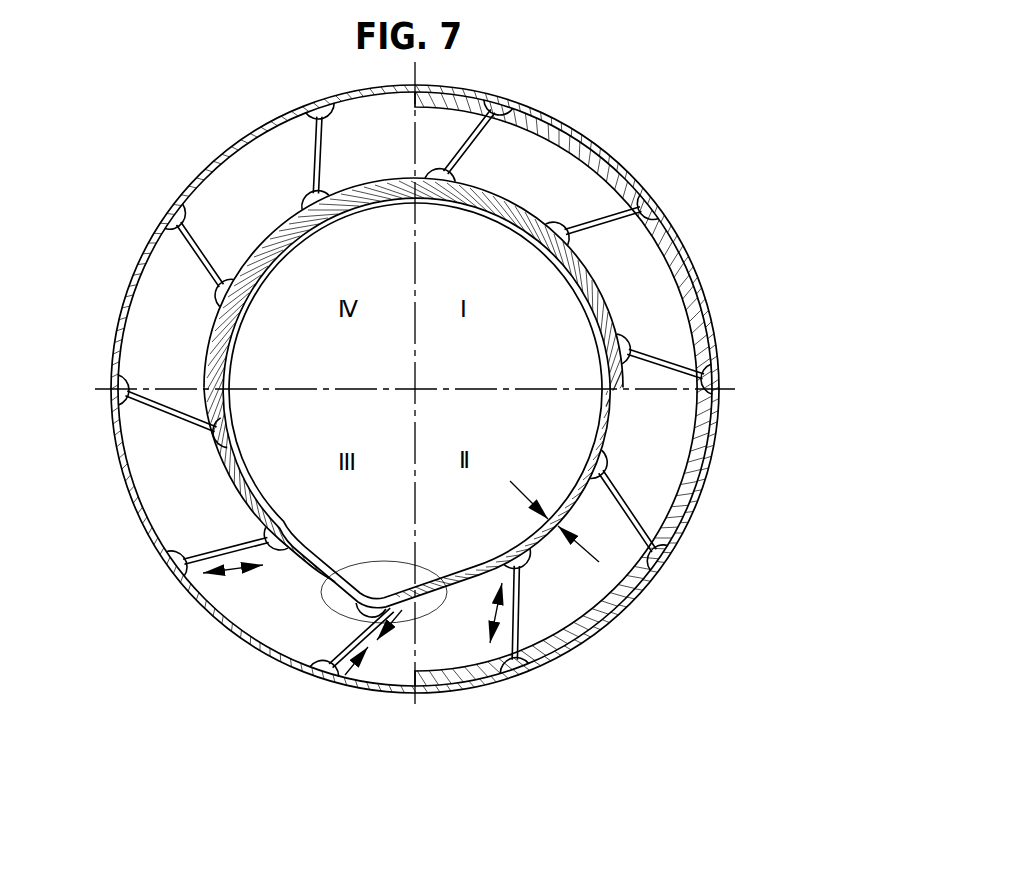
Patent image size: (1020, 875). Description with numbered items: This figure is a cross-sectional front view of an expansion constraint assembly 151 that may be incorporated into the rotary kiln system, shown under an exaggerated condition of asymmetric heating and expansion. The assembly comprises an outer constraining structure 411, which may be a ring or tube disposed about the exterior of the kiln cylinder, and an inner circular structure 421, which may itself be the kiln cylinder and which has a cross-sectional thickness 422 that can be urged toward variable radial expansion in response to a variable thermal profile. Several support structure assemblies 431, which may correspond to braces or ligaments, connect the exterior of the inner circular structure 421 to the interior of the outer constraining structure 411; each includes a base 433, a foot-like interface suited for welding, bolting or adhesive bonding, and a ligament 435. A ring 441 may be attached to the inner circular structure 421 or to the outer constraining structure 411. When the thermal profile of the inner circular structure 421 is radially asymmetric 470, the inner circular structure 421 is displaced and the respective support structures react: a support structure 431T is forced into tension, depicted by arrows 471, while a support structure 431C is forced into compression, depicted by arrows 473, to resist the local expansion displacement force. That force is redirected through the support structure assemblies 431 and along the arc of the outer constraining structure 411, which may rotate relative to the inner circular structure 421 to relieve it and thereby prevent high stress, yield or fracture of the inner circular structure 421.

The expansion constraint assembly 151 is at (623, 130).
The outer constraining structure 411 is at (722, 296).
The inner circular structure 421 is at (243, 467).
The cross-sectional thickness 422 is at (550, 523).
The support structure assembly 431 is at (185, 270).
The support structure in tension 431T is at (170, 545).
The support structure in compression 431C is at (347, 633).
The base 433 is at (175, 222).
The ligament 435 is at (183, 248).
The ring 441 is at (390, 177).
The radially asymmetric thermal profile 470 is at (367, 562).
The arrows depicting tension 471 is at (230, 573).
The arrows depicting compression 473 is at (400, 614).